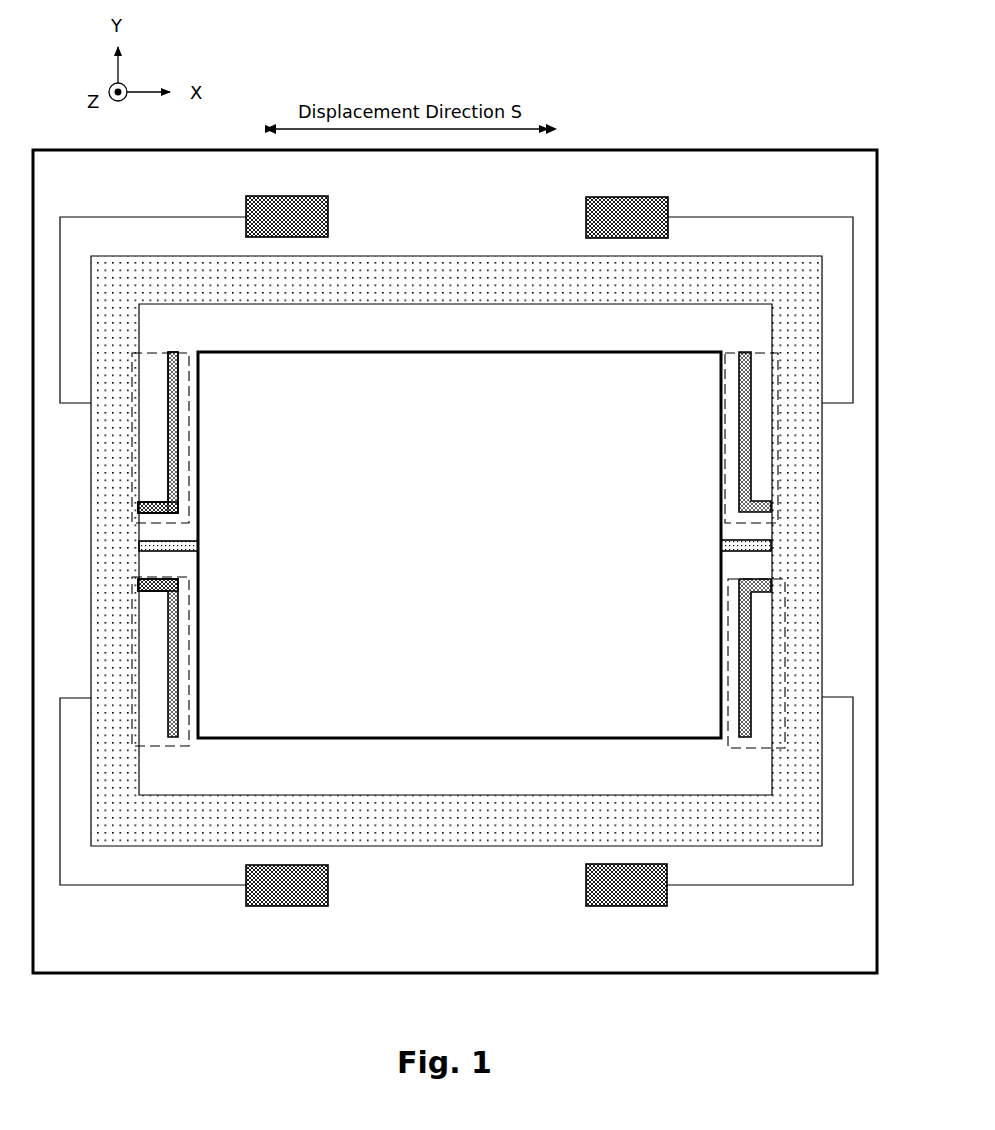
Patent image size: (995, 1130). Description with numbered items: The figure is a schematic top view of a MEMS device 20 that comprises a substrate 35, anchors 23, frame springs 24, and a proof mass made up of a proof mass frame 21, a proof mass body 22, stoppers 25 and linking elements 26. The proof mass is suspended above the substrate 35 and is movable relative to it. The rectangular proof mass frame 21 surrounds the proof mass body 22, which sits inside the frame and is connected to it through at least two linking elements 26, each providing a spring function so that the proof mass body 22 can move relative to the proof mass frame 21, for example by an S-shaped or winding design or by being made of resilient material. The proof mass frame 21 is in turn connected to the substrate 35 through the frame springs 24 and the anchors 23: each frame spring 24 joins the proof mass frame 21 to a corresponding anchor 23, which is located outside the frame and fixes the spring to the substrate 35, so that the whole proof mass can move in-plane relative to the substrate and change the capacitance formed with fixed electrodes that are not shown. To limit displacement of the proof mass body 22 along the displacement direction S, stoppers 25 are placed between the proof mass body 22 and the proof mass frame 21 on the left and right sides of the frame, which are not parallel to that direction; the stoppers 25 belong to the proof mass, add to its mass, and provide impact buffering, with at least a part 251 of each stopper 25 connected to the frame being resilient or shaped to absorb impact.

The MEMS device 20 is at (743, 76).
The proof mass frame 21 is at (575, 256).
The proof mass body 22 is at (457, 577).
The anchor 23 is at (305, 196).
The frame spring 24 is at (205, 217).
The stopper 25 is at (175, 352).
The part of the stopper 251 is at (163, 501).
The linking element 26 is at (199, 546).
The substrate 35 is at (265, 973).